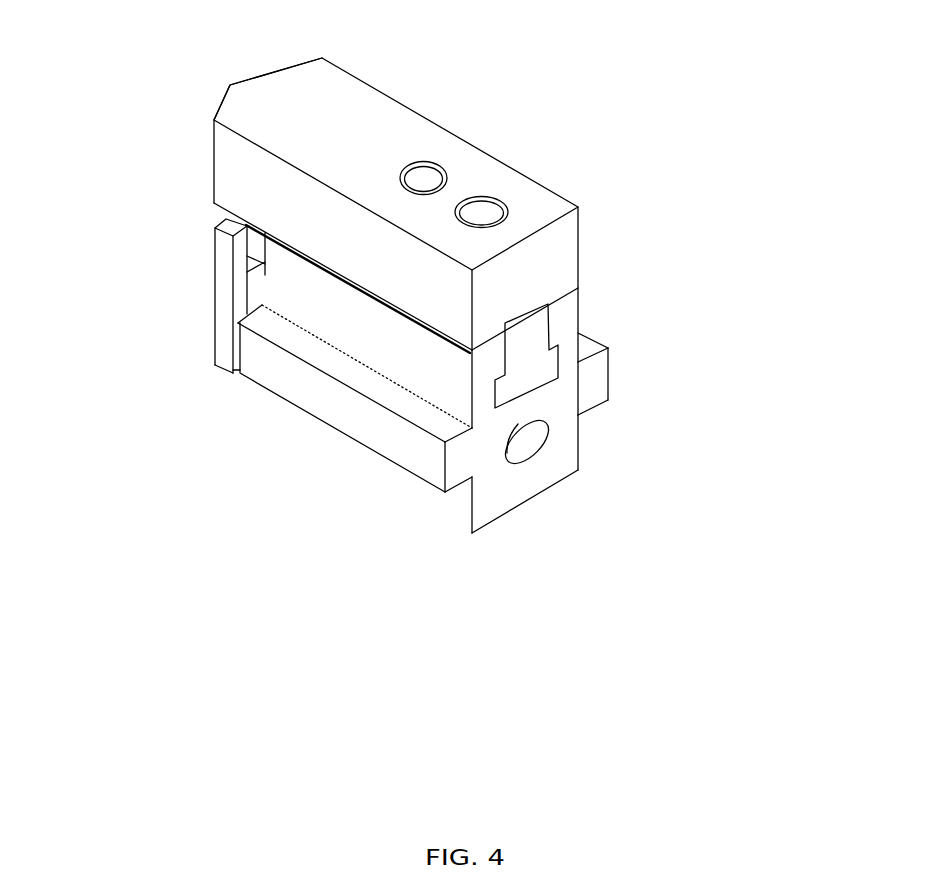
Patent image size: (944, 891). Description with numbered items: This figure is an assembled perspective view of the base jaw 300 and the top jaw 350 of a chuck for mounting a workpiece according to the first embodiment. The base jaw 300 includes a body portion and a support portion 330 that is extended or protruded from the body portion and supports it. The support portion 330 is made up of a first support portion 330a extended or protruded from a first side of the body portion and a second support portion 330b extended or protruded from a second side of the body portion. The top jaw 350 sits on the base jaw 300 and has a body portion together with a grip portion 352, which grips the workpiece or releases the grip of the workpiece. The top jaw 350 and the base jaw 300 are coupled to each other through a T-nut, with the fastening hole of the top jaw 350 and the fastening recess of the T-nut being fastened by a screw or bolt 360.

The base jaw 300 is at (450, 348).
The support portion 330 is at (461, 453).
The first support portion 330a is at (423, 465).
The second support portion 330b is at (608, 382).
The top jaw 350 is at (422, 185).
The grip portion 352 is at (200, 85).
The screw or bolt 360 is at (480, 200).